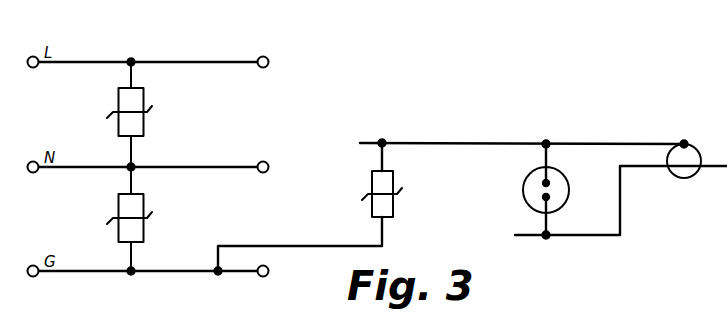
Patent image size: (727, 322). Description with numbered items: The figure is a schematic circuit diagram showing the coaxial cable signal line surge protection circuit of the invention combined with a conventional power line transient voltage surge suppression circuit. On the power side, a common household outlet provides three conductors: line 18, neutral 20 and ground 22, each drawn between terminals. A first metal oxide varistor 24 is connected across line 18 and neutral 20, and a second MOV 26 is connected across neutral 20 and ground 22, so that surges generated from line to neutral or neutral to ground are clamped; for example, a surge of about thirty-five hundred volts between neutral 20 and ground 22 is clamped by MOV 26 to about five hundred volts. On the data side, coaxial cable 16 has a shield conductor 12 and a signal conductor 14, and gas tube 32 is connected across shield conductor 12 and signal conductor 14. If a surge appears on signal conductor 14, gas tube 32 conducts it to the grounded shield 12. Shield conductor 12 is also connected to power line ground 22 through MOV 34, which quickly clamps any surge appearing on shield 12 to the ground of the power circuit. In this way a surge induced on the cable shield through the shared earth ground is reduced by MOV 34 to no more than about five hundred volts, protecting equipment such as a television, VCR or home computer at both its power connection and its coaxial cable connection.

The shield conductor 12 is at (588, 143).
The signal conductor 14 is at (590, 238).
The coaxial cable 16 is at (681, 178).
The line 18 is at (205, 60).
The neutral 20 is at (203, 163).
The ground 22 is at (170, 268).
The first metal oxide varistor 24 is at (118, 95).
The second MOV 26 is at (118, 200).
The gas tube 32 is at (523, 183).
The MOV 34 is at (372, 179).